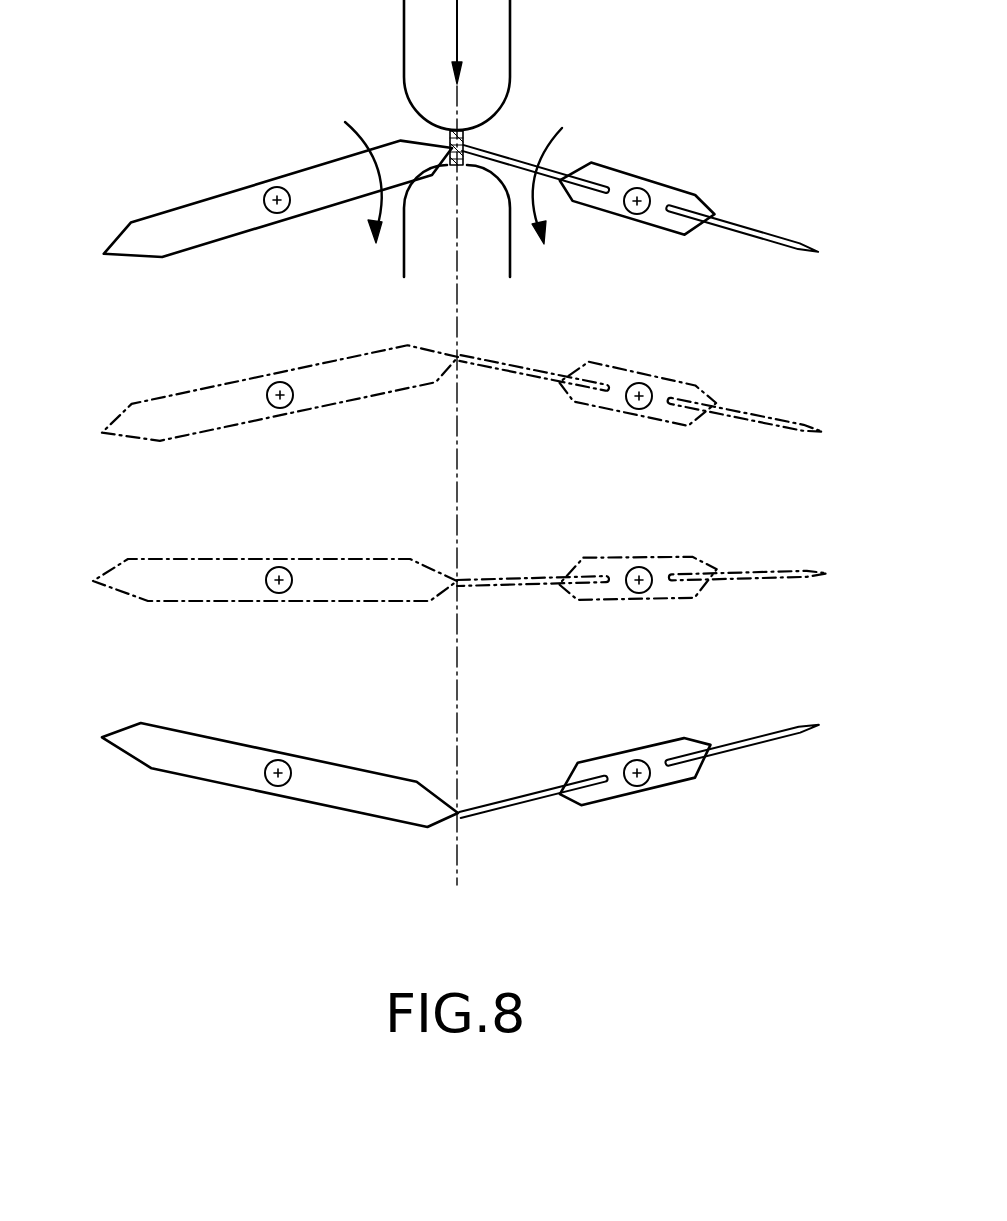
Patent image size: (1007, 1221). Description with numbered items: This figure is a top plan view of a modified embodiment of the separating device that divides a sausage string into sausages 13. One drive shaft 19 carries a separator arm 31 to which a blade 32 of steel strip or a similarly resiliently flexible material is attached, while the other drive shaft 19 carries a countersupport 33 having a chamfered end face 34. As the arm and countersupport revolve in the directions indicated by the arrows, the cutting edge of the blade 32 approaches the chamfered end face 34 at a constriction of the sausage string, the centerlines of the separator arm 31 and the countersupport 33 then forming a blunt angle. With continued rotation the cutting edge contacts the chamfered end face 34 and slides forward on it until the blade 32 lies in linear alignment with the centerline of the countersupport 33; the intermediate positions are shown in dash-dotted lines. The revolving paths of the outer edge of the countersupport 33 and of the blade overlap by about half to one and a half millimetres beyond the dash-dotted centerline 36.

The sausage 13 is at (495, 72).
The drive shaft 19 is at (283, 206).
The separator arm 31 is at (657, 192).
The blade 32 is at (560, 178).
The countersupport 33 is at (245, 203).
The chamfered end face 34 is at (450, 164).
The centerline 36 is at (453, 283).